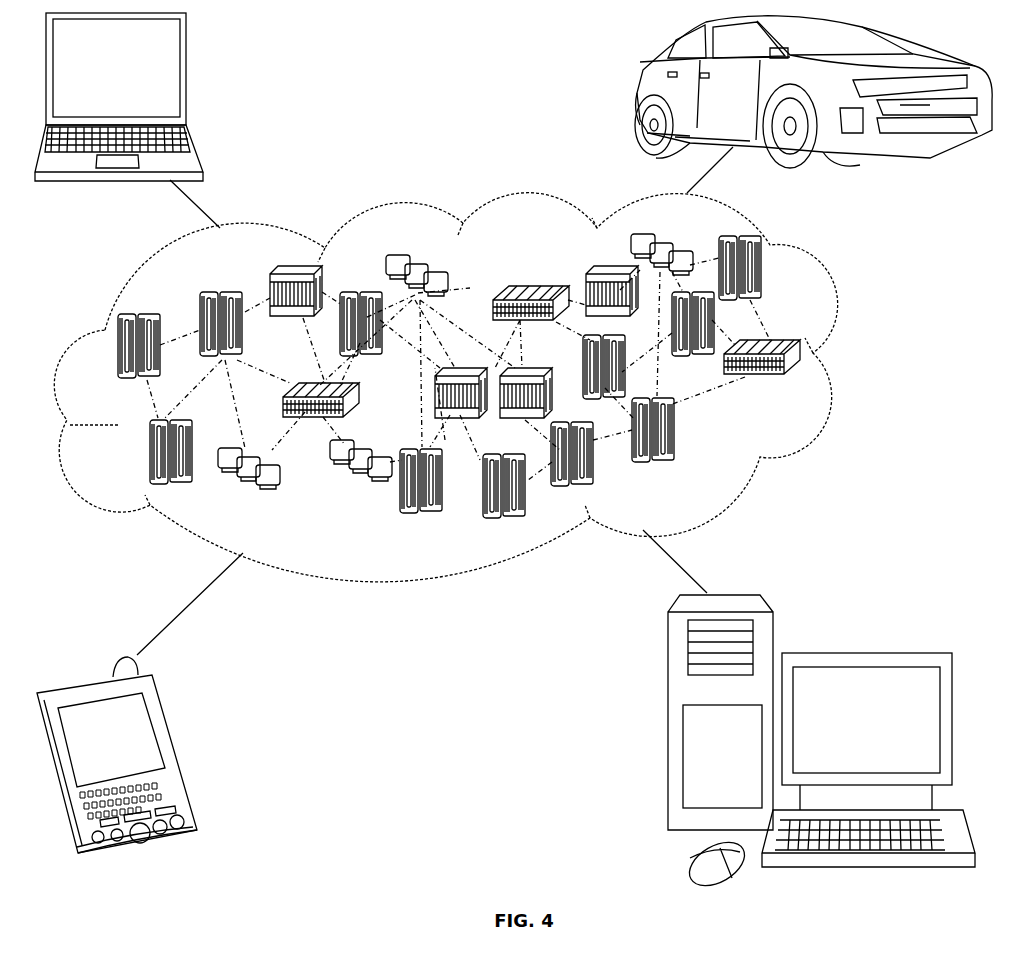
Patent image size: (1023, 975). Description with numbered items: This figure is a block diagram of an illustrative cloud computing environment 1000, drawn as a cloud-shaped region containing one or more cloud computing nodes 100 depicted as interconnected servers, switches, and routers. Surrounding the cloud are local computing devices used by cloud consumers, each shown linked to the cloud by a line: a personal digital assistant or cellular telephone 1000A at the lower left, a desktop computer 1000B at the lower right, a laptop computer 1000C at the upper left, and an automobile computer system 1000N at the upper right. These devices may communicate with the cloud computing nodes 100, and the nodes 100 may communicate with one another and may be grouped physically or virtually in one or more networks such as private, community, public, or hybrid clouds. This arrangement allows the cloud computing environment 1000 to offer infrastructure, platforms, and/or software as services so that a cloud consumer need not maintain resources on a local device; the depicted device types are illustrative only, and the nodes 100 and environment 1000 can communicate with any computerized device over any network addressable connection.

The cloud computing nodes 100 is at (803, 388).
The cloud computing environment 1000 is at (865, 357).
The personal digital assistant (PDA) or cellular telephone 1000A is at (177, 750).
The desktop computer 1000B is at (862, 653).
The laptop computer 1000C is at (188, 78).
The automobile computer system 1000N is at (638, 90).